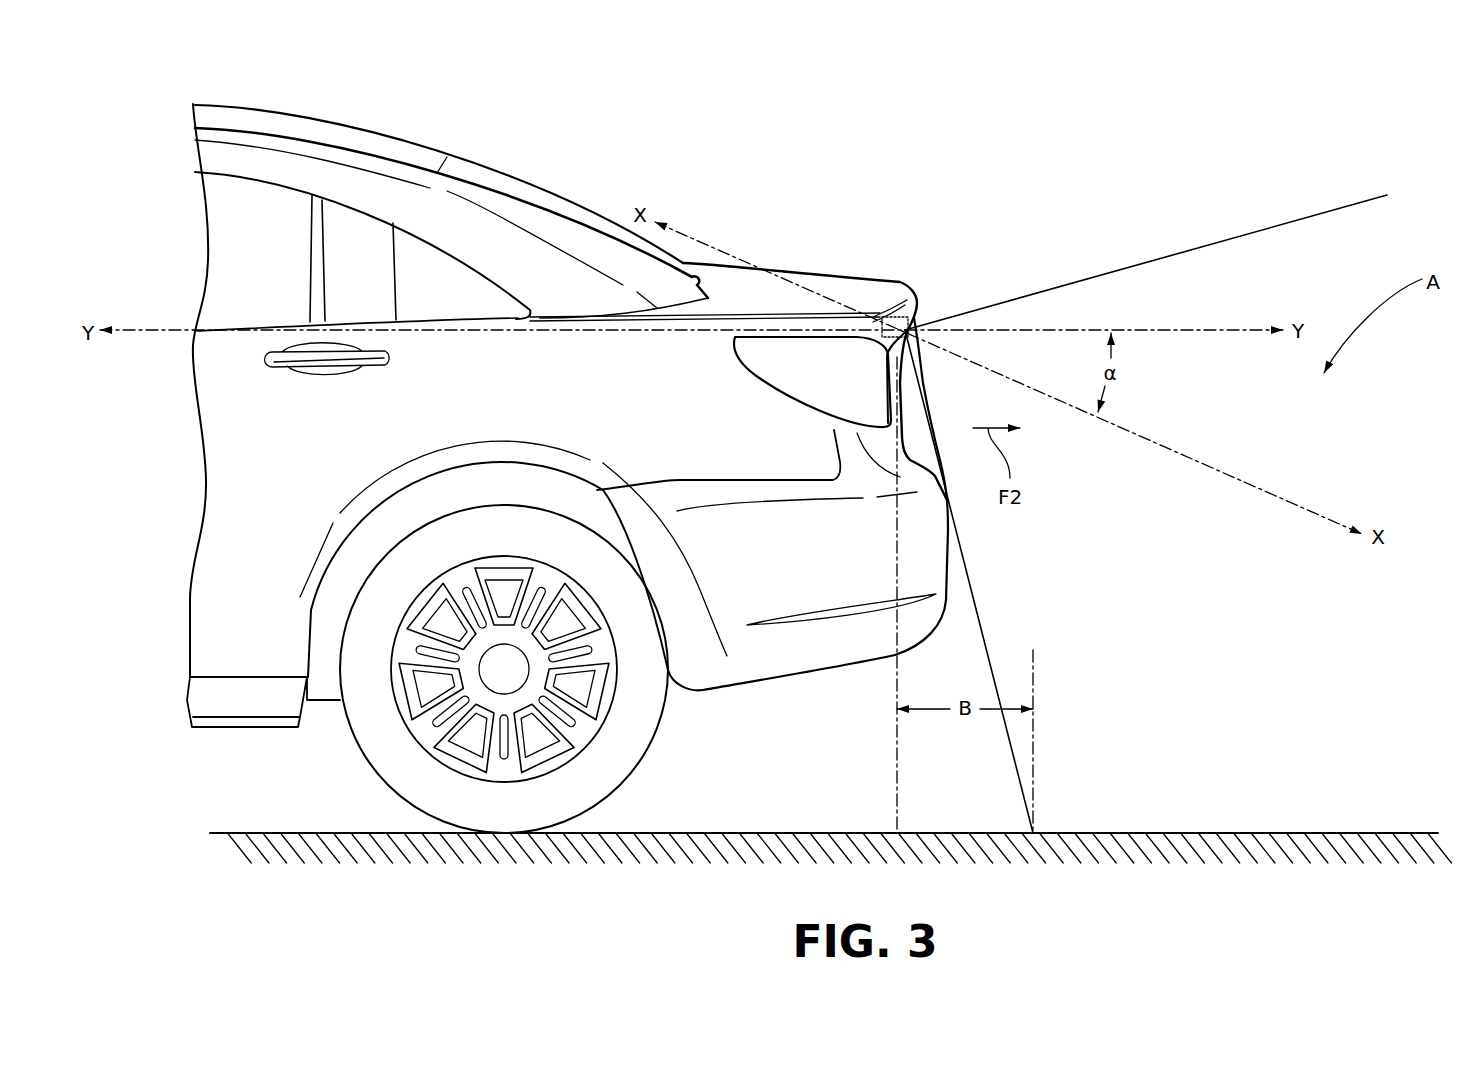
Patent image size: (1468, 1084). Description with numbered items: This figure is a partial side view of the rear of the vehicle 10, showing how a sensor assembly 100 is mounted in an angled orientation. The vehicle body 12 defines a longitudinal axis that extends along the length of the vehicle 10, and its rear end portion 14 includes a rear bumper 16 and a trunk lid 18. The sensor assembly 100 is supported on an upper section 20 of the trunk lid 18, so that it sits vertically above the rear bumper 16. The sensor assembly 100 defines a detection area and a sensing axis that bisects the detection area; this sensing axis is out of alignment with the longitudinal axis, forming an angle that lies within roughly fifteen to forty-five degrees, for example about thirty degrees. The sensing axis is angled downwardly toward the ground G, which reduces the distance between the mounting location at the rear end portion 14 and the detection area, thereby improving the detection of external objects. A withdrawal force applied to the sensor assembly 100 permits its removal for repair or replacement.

The vehicle 10 is at (843, 138).
The vehicle body 12 is at (813, 243).
The rear end portion 14 is at (992, 282).
The rear bumper 16 is at (836, 581).
The trunk lid 18 is at (748, 261).
The upper section 20 is at (918, 306).
The sensor assembly 100 is at (867, 343).
The ground G is at (1198, 845).